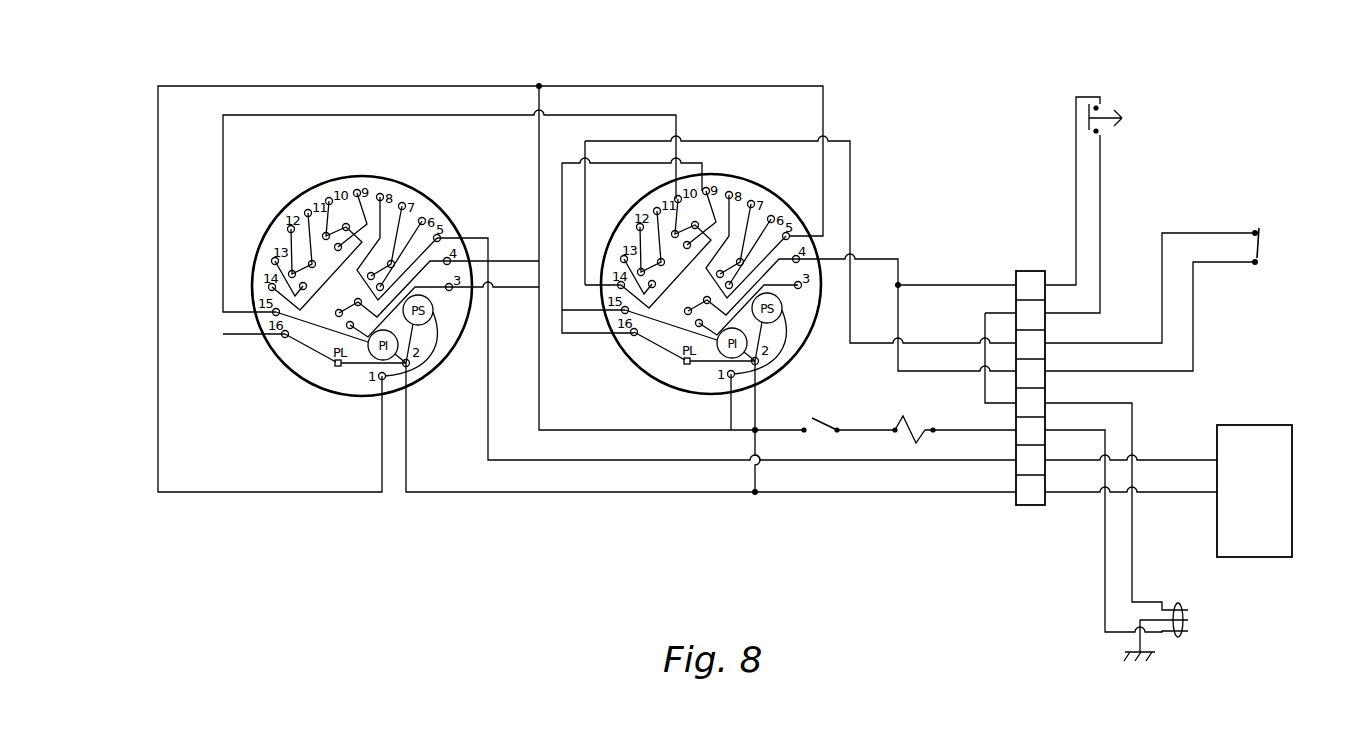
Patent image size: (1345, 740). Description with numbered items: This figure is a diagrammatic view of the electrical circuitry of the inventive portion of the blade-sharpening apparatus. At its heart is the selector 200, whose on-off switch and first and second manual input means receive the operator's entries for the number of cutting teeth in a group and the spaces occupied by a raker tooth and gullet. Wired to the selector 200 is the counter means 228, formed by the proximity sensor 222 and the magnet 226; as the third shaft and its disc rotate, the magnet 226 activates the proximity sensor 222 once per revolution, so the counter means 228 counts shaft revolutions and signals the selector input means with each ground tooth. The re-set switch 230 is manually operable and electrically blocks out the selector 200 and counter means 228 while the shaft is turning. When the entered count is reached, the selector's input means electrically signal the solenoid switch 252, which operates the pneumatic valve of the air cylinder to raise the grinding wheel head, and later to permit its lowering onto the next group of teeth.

The selector 200 is at (735, 52).
The re-set switch 230 is at (1107, 113).
The proximity sensor 222 is at (1258, 231).
The magnet 226 is at (1256, 262).
The counter means 228 is at (1262, 247).
The solenoid switch 252 is at (1254, 491).